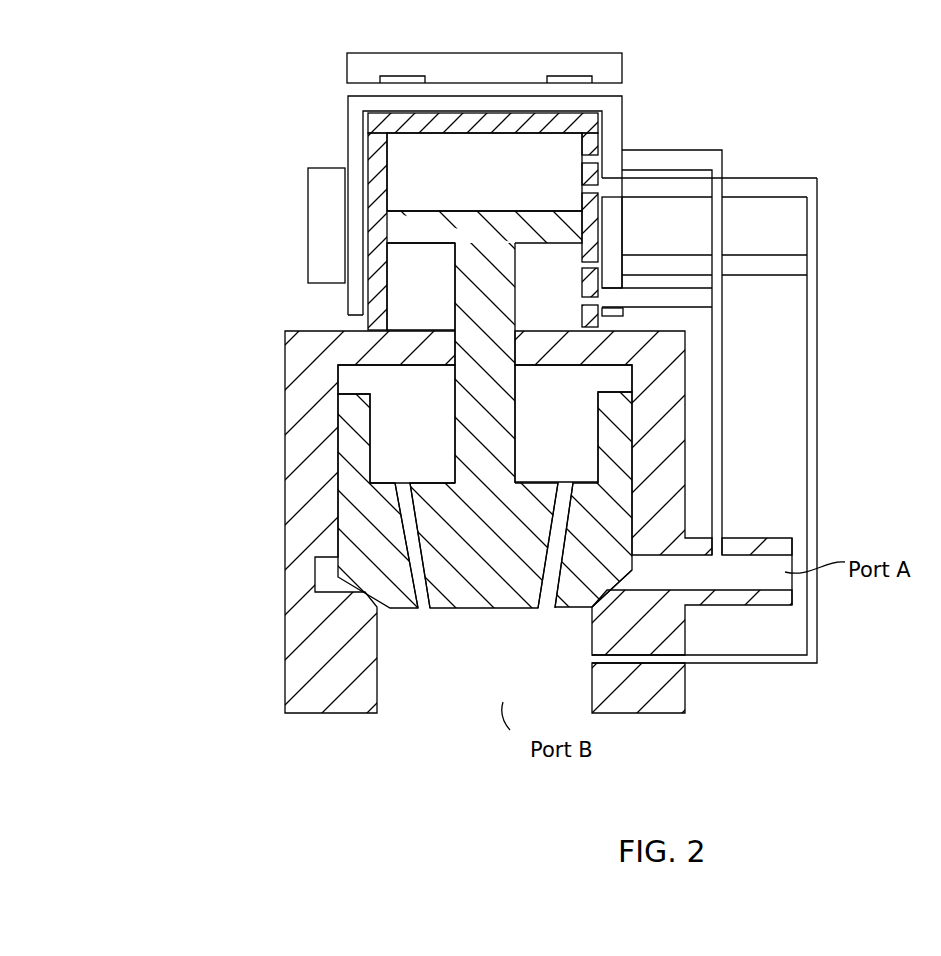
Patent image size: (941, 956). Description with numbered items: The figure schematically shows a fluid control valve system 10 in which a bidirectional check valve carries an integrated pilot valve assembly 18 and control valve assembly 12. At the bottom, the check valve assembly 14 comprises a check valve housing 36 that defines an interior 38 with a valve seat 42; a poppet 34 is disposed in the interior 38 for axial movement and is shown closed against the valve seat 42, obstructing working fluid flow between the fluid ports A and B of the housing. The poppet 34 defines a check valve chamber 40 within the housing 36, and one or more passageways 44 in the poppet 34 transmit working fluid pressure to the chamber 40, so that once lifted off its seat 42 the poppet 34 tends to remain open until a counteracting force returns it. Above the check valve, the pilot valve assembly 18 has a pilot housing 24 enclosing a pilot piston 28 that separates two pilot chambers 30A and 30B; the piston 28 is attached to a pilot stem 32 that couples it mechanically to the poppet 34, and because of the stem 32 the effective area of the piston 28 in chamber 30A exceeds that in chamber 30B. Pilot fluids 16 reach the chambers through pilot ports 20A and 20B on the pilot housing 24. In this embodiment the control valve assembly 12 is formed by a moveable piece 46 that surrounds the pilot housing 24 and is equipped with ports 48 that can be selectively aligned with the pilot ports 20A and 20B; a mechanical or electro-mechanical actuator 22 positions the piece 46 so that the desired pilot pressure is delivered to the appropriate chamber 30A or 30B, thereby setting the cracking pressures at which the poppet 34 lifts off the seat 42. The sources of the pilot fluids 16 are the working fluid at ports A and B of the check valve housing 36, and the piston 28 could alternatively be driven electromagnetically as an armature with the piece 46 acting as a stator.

The valve system 10 is at (197, 112).
The control valve assembly 12 is at (646, 139).
The check valve assembly 14 is at (232, 573).
The pilot fluids 16 is at (812, 410).
The pilot valve assembly 18 is at (366, 128).
The pilot port 20A is at (582, 187).
The pilot port 20B is at (582, 300).
The actuator 22 is at (315, 238).
The pilot housing 24 is at (485, 125).
The pilot piston 28 is at (478, 222).
The pilot chamber 30A is at (440, 172).
The pilot chamber 30B is at (440, 280).
The pilot stem 32 is at (467, 310).
The poppet 34 is at (358, 517).
The check valve housing 36 is at (288, 353).
The interior 38 is at (565, 367).
The check valve chamber 40 is at (414, 452).
The valve seat 42 is at (593, 606).
The passageways 44 is at (423, 603).
The moveable piece 46 is at (615, 122).
The ports 48 is at (610, 300).